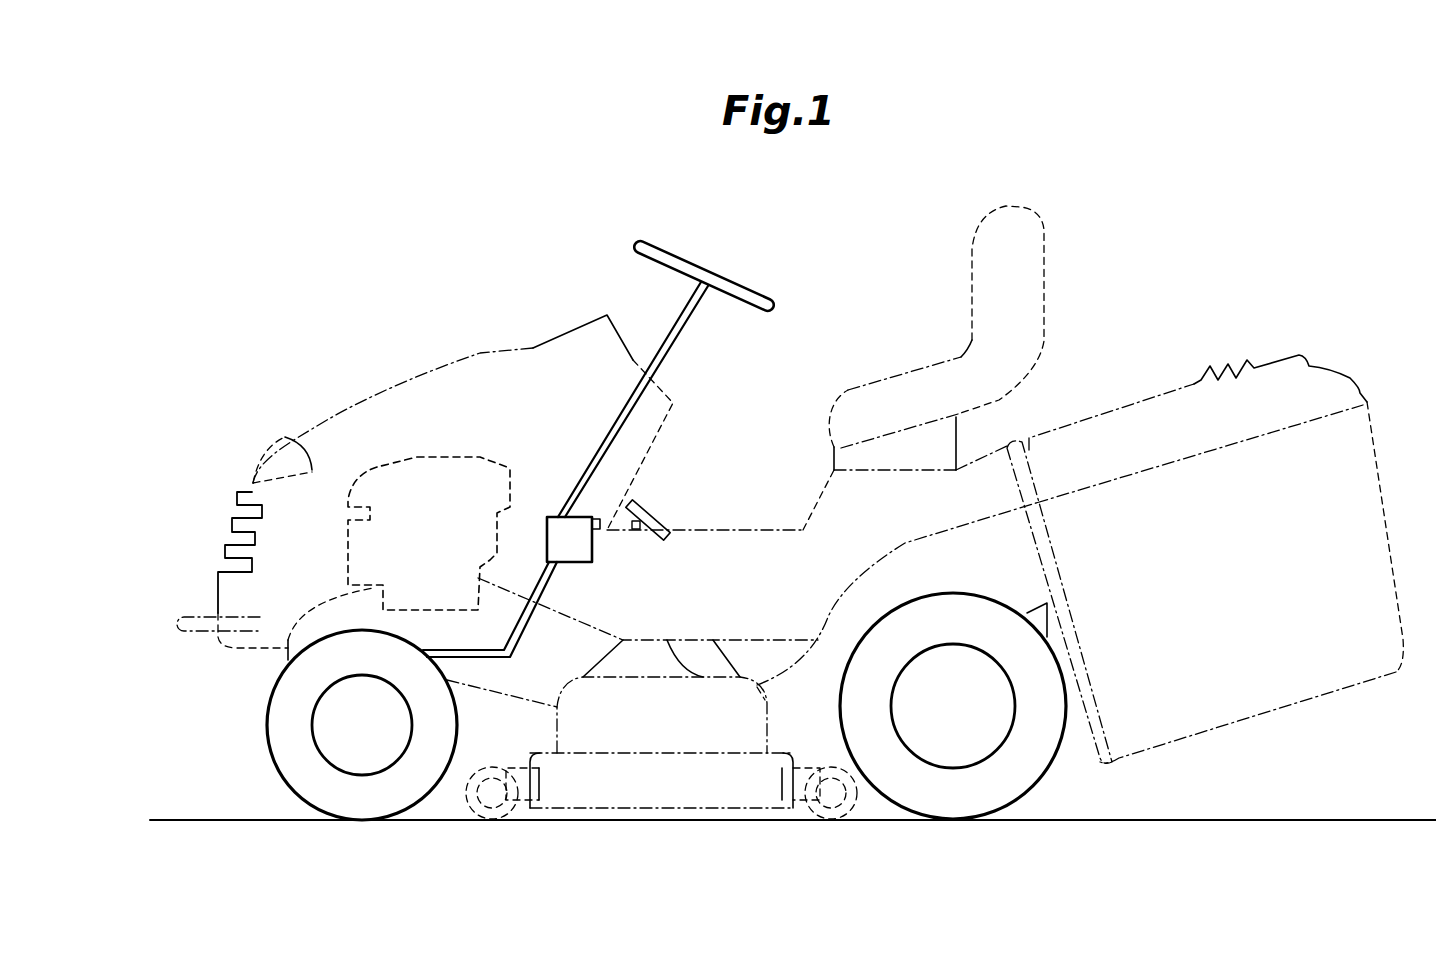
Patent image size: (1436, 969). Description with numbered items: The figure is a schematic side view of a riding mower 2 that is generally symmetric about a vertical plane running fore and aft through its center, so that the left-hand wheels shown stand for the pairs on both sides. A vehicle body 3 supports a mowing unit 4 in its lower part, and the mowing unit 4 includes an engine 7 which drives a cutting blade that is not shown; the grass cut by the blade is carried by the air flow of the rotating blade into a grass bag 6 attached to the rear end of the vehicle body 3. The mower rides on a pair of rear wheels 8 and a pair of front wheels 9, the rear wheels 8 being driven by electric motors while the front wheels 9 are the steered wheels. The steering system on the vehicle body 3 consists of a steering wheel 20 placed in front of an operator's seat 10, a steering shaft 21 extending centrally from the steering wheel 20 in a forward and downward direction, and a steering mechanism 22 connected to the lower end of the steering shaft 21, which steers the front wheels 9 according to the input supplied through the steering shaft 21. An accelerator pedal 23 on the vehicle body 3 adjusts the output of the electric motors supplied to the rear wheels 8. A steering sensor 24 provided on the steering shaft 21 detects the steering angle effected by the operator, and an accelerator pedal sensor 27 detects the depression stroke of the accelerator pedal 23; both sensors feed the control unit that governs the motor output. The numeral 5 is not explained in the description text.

The riding mower 2 is at (1050, 144).
The vehicle body 3 is at (441, 371).
The mowing unit 4 is at (607, 808).
The gauge wheel 5 is at (793, 737).
The grass bag 6 is at (1378, 463).
The engine 7 is at (377, 467).
The rear wheels 8 is at (1027, 797).
The front wheels 9 is at (288, 780).
The operator's seat 10 is at (1044, 269).
The steering wheel 20 is at (757, 292).
The steering shaft 21 is at (682, 317).
The steering mechanism 22 is at (556, 516).
The accelerator pedal 23 is at (647, 512).
The steering sensor 24 is at (603, 522).
The accelerator pedal sensor 27 is at (637, 532).